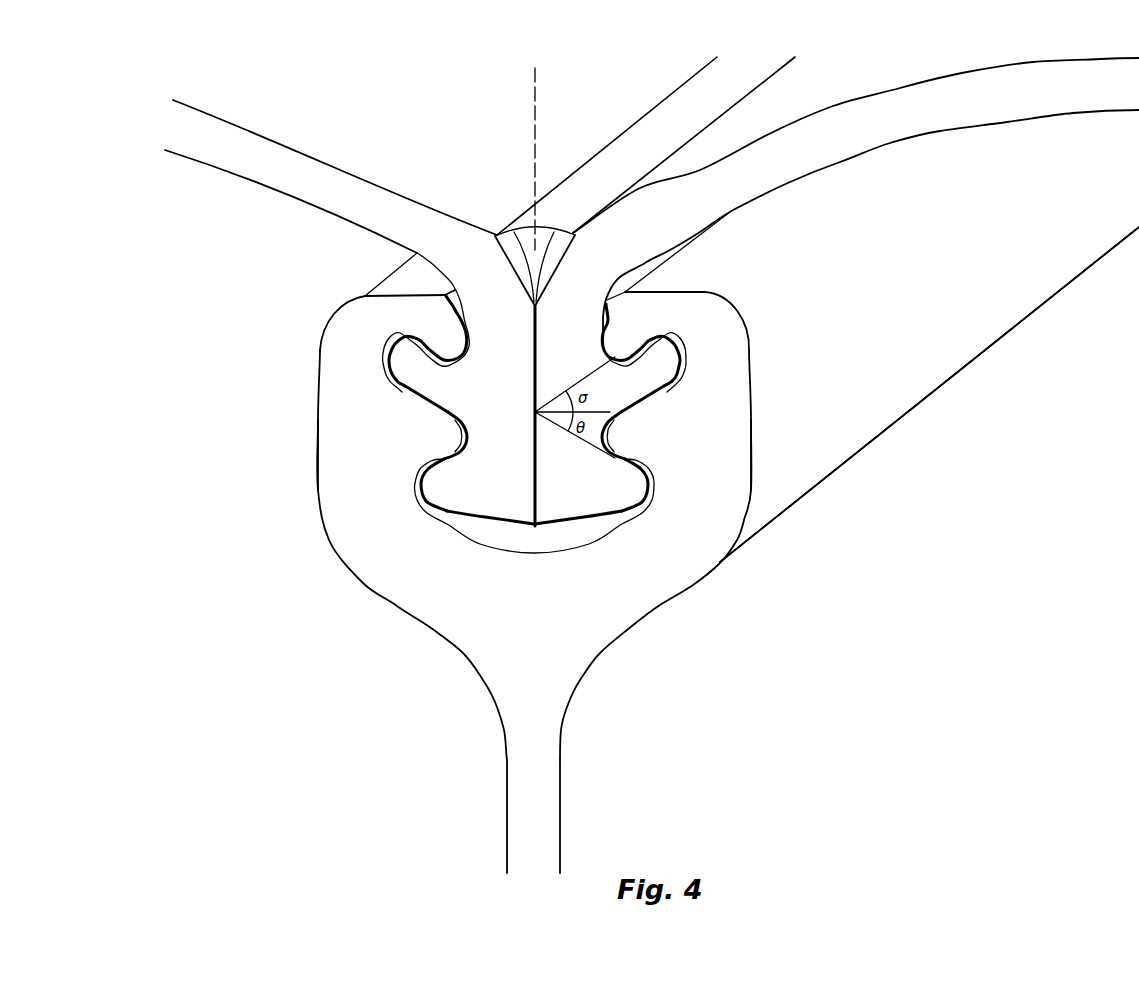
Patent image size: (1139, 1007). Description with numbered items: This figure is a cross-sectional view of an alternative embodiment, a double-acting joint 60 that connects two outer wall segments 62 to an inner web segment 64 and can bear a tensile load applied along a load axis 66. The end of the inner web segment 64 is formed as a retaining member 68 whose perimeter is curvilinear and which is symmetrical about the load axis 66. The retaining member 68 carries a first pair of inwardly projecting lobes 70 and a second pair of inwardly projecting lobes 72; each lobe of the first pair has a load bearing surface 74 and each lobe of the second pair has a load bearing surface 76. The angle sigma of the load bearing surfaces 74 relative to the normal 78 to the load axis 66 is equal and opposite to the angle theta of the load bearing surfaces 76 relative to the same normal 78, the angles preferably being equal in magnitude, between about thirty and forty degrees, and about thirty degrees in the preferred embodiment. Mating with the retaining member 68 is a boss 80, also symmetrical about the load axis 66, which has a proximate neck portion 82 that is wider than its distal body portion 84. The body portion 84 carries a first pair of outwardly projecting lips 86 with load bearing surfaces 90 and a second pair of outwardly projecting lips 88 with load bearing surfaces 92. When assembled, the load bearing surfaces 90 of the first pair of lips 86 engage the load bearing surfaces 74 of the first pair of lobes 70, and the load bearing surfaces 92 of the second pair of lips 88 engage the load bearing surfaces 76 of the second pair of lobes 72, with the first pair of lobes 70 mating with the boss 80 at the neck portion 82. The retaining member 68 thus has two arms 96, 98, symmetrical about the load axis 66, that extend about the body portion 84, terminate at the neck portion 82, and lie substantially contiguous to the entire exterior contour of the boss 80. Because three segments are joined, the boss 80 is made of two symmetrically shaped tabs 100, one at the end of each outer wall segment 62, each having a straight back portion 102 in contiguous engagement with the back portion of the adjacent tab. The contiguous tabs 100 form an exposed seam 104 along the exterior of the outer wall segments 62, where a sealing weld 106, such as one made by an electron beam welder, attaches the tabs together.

The double-acting joint 60 is at (752, 626).
The outer wall segment 62 is at (267, 163).
The inner web segment 64 is at (542, 835).
The load axis 66 is at (537, 120).
The retaining member 68 is at (564, 622).
The first pair of lobes 70 is at (445, 336).
The second pair of lobes 72 is at (449, 446).
The load bearing surface 74 is at (415, 338).
The load bearing surface 76 is at (442, 457).
The normal 78 is at (636, 398).
The boss 80 is at (565, 471).
The neck portion 82 is at (603, 329).
The body portion 84 is at (433, 372).
The first pair of lips 86 is at (419, 373).
The second pair of lips 88 is at (457, 493).
The load bearing surface 90 is at (432, 357).
The load bearing surface 92 is at (452, 454).
The arm 96 is at (330, 413).
The arm 98 is at (733, 411).
The tab 100 is at (514, 517).
The back portion 102 is at (533, 345).
The exposed seam 104 is at (548, 240).
The sealing weld 106 is at (520, 236).